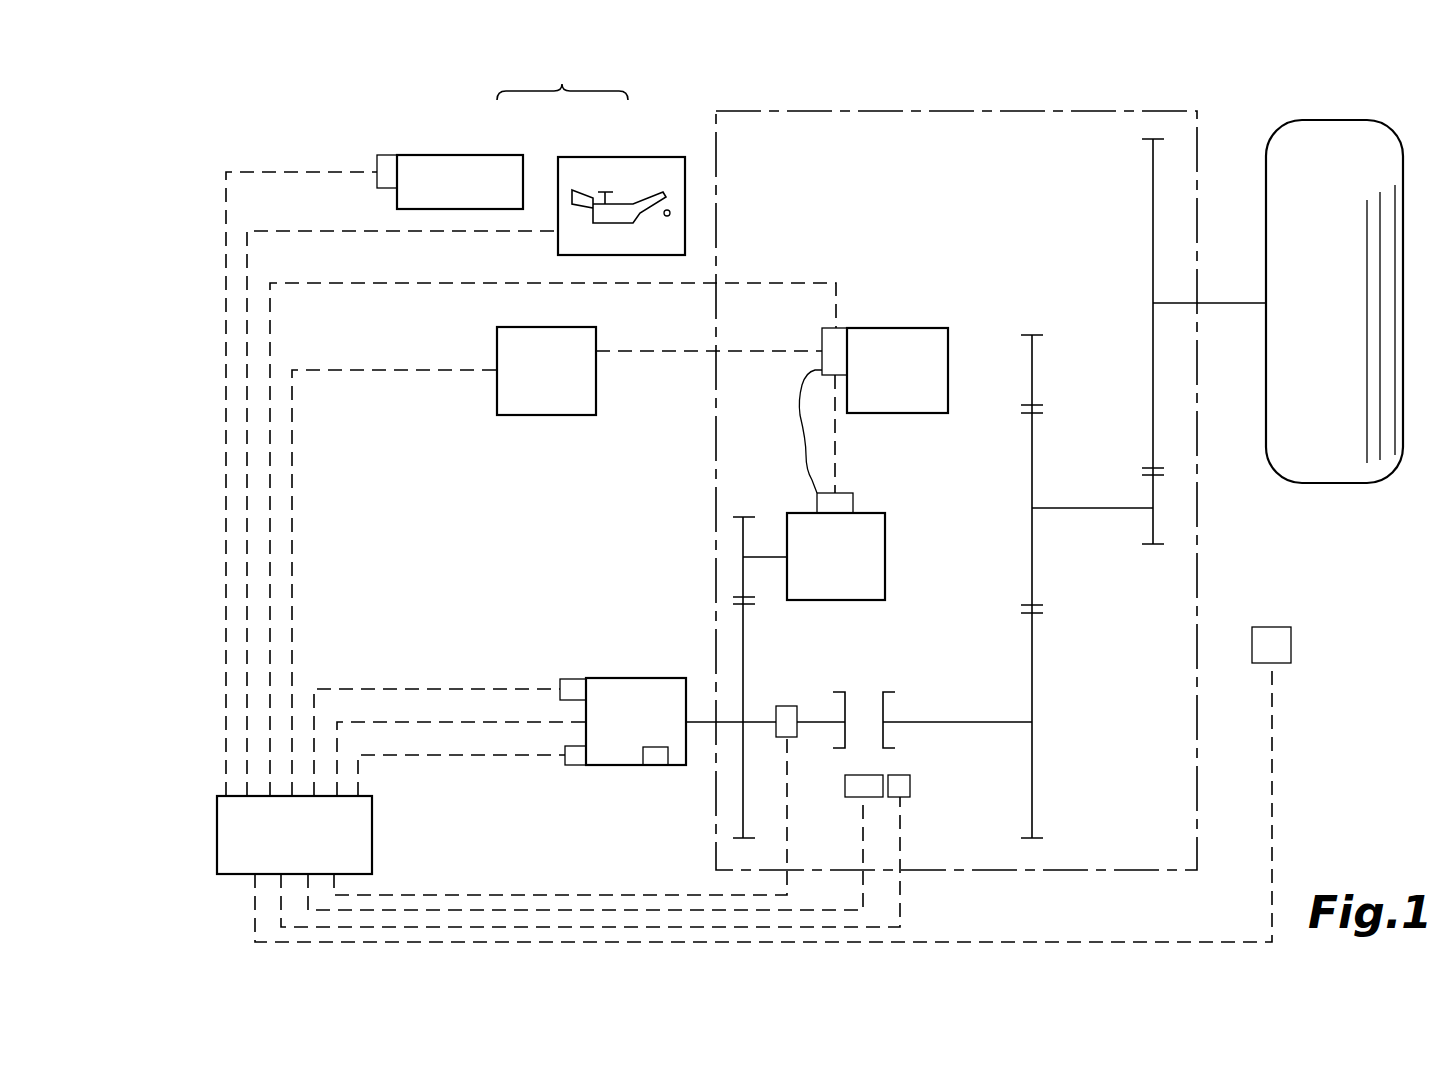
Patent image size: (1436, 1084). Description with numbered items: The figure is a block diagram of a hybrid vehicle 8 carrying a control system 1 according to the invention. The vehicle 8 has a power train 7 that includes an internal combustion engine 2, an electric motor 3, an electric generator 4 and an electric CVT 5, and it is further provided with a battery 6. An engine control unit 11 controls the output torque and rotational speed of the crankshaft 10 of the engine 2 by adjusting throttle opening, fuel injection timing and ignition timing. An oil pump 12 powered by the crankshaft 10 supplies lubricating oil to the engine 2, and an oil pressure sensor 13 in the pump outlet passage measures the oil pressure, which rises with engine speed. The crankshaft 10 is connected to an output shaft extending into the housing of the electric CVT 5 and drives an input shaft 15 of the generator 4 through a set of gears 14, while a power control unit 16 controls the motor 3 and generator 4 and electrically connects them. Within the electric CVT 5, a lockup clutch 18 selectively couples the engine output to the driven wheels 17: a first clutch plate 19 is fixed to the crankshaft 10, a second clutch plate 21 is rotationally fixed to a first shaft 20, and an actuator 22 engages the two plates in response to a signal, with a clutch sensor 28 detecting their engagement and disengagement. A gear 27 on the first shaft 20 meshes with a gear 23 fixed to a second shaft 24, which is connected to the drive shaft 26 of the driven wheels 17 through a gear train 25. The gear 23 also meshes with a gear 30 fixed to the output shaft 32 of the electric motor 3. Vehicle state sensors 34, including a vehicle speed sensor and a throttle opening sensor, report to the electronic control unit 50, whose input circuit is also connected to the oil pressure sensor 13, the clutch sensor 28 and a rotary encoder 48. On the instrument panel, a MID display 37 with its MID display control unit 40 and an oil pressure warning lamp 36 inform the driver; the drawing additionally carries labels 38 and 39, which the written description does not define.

The control system 1 is at (205, 789).
The internal combustion engine 2 is at (637, 678).
The electric motor 3 is at (910, 328).
The electric generator 4 is at (862, 513).
The electric CVT 5 is at (1207, 556).
The battery 6 is at (548, 327).
The power train 7 is at (752, 104).
The hybrid vehicle 8 is at (1204, 113).
The crankshaft 10 is at (756, 722).
The engine control unit 11 is at (572, 679).
The oil pump 12 is at (663, 757).
The oil pressure sensor 13 is at (572, 766).
The set of gears 14 is at (728, 598).
The input shaft 15 is at (775, 557).
The power control unit 16 is at (800, 405).
The driven wheels 17 is at (1325, 483).
The lockup clutch 18 is at (841, 757).
The first clutch plate 19 is at (840, 711).
The first shaft 20 is at (983, 722).
The second clutch plate 21 is at (890, 711).
The actuator 22 is at (855, 797).
The gear 23 is at (1050, 576).
The second shaft 24 is at (1073, 508).
The gear train 25 is at (1170, 462).
The drive shaft 26 is at (1210, 303).
The gear 27 is at (1048, 786).
The clutch sensor 28 is at (912, 786).
The gear 30 is at (1050, 369).
The output shaft 32 is at (989, 370).
The vehicle state sensors 34 is at (1291, 643).
The oil pressure warning lamp 36 is at (605, 157).
The MID display 37 is at (502, 155).
The indicator unit 38 is at (562, 75).
The display connection 39 is at (397, 193).
The MID display control unit 40 is at (386, 155).
The rotary encoder 48 is at (777, 737).
The electronic control unit 50 is at (233, 875).